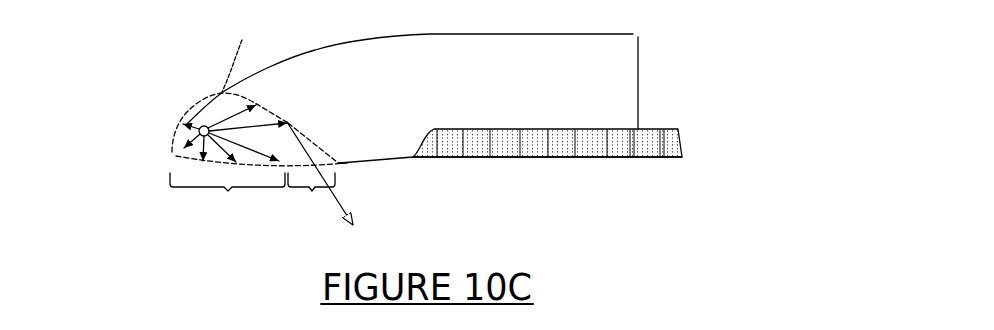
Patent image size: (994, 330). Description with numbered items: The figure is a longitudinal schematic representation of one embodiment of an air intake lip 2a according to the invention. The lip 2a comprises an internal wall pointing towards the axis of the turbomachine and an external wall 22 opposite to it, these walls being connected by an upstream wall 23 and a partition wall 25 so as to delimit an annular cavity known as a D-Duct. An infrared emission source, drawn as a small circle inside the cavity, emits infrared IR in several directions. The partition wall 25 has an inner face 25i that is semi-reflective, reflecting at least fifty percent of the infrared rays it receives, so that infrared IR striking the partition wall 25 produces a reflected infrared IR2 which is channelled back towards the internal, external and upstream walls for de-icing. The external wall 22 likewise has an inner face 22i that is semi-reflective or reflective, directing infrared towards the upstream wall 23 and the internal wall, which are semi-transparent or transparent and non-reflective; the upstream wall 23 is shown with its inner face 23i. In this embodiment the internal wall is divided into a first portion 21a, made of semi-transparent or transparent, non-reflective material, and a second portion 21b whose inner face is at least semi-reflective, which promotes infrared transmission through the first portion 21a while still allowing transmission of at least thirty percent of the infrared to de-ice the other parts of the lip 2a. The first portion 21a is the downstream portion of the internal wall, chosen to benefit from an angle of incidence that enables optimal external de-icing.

The lip 2a is at (156, 129).
The first portion 21a is at (311, 196).
The second portion 21b is at (227, 196).
The external wall 22 is at (223, 89).
The inner face 22i is at (203, 102).
The upstream wall 23 is at (196, 172).
The inner surface of lower wall 23i is at (172, 150).
The partition wall 25 is at (339, 118).
The inner face 25i is at (307, 134).
The infrared IR is at (235, 133).
The reflected infrared IR2 is at (334, 188).